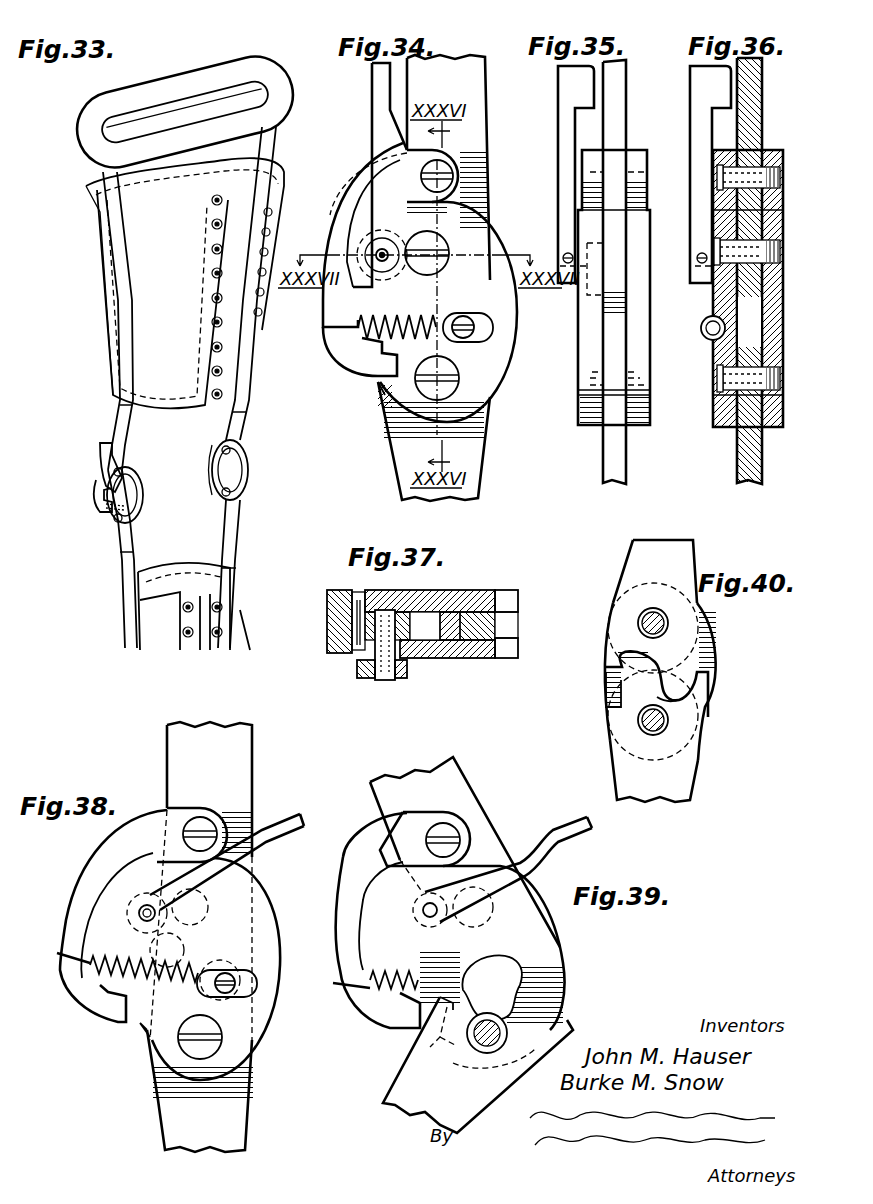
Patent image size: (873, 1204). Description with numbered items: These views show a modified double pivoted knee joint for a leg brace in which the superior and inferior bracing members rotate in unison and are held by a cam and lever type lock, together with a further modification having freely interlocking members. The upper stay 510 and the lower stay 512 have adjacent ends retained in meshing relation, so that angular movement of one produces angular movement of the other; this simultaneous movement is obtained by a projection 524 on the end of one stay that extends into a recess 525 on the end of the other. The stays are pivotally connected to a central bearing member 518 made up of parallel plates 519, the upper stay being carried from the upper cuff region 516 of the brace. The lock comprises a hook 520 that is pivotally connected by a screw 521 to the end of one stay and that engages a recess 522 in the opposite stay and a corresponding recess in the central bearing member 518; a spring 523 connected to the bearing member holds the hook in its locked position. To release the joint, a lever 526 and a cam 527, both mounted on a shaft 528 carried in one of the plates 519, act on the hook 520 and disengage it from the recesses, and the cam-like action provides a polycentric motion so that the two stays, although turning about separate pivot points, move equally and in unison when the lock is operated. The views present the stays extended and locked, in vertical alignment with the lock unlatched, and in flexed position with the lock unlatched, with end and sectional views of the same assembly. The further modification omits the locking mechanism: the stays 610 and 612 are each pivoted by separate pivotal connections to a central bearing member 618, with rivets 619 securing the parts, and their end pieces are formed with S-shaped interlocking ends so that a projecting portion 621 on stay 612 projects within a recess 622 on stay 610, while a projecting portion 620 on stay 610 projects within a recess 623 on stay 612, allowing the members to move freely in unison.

In FIG. 33, the upper stay 510 is at (241, 418).
In FIG. 34, the upper stay 510 is at (485, 84).
In FIG. 35, the upper stay 510 is at (612, 78).
In FIG. 36, the upper stay 510 is at (750, 80).
In FIG. 39, the upper stay 510 is at (445, 778).
In FIG. 33, the lower stay 512 is at (117, 572).
In FIG. 34, the lower stay 512 is at (478, 479).
In FIG. 35, the lower stay 512 is at (610, 438).
In FIG. 36, the lower stay 512 is at (738, 472).
In FIG. 37, the lower stay 512 is at (500, 630).
In FIG. 38, the lower stay 512 is at (175, 1092).
In FIG. 39, the lower stay 512 is at (410, 1097).
In FIG. 33, the upper cuff section 516 is at (123, 382).
In FIG. 38, the upper cuff section 516 is at (178, 750).
In FIG. 33, the central bearing member 518 is at (153, 486).
In FIG. 34, the central bearing member 518 is at (540, 320).
In FIG. 35, the central bearing member 518 is at (573, 397).
In FIG. 36, the central bearing member 518 is at (706, 423).
In FIG. 37, the central bearing member 518 is at (509, 592).
In FIG. 38, the central bearing member 518 is at (258, 917).
In FIG. 39, the central bearing member 518 is at (572, 993).
In FIG. 33, the parallel plates 519 is at (140, 515).
In FIG. 34, the parallel plates 519 is at (481, 240).
In FIG. 35, the parallel plates 519 is at (630, 397).
In FIG. 36, the parallel plates 519 is at (740, 432).
In FIG. 37, the parallel plates 519 is at (460, 600).
In FIG. 38, the parallel plates 519 is at (266, 945).
In FIG. 39, the parallel plates 519 is at (570, 1012).
In FIG. 33, the hook 520 is at (96, 490).
In FIG. 34, the hook 520 is at (341, 340).
In FIG. 37, the hook 520 is at (335, 622).
In FIG. 38, the hook 520 is at (80, 1003).
In FIG. 39, the hook 520 is at (352, 1010).
In FIG. 34, the screw 521 is at (455, 172).
In FIG. 36, the screw 521 is at (764, 170).
In FIG. 38, the screw 521 is at (216, 828).
In FIG. 39, the screw 521 is at (457, 830).
In FIG. 34, the recess 522 is at (376, 388).
In FIG. 38, the recess 522 is at (140, 1026).
In FIG. 39, the recess 522 is at (402, 1050).
In FIG. 34, the spring 523 is at (432, 320).
In FIG. 35, the spring 523 is at (557, 356).
In FIG. 36, the spring 523 is at (711, 340).
In FIG. 38, the spring 523 is at (82, 968).
In FIG. 39, the spring 523 is at (352, 968).
In FIG. 38, the projection 524 is at (200, 948).
In FIG. 39, the projection 524 is at (526, 975).
In FIG. 38, the recess 525 is at (205, 915).
In FIG. 39, the recess 525 is at (535, 942).
In FIG. 33, the lever 526 is at (100, 456).
In FIG. 34, the lever 526 is at (372, 82).
In FIG. 35, the lever 526 is at (616, 174).
In FIG. 36, the lever 526 is at (745, 174).
In FIG. 37, the lever 526 is at (378, 676).
In FIG. 38, the lever 526 is at (310, 820).
In FIG. 39, the lever 526 is at (556, 848).
In FIG. 34, the cam 527 is at (350, 296).
In FIG. 35, the cam 527 is at (588, 278).
In FIG. 36, the cam 527 is at (716, 290).
In FIG. 37, the cam 527 is at (352, 645).
In FIG. 38, the cam 527 is at (118, 903).
In FIG. 39, the cam 527 is at (420, 915).
In FIG. 34, the shaft 528 is at (378, 250).
In FIG. 35, the shaft 528 is at (568, 253).
In FIG. 36, the shaft 528 is at (703, 253).
In FIG. 37, the shaft 528 is at (386, 682).
In FIG. 38, the shaft 528 is at (140, 908).
In FIG. 39, the shaft 528 is at (425, 897).
In FIG. 40, the stay 610 is at (650, 560).
In FIG. 40, the stay 612 is at (680, 773).
In FIG. 40, the central bearing member 618 is at (727, 632).
In FIG. 40, the rivets 619 is at (653, 671).
In FIG. 40, the projecting portion 620 is at (684, 680).
In FIG. 40, the projecting portion 621 is at (628, 668).
In FIG. 40, the recess 622 is at (636, 640).
In FIG. 40, the recess 623 is at (675, 702).